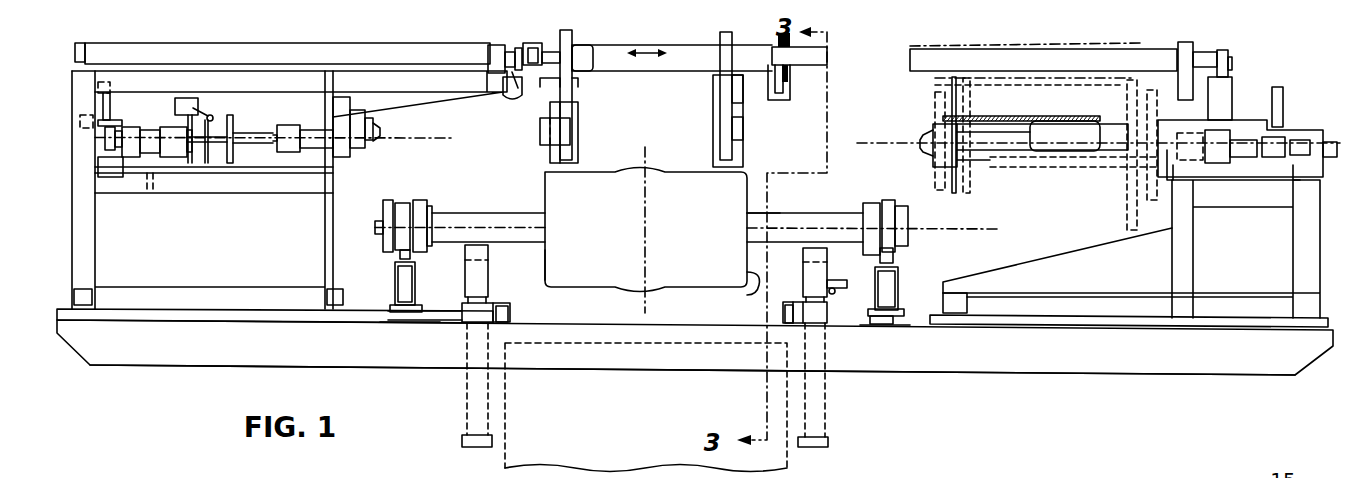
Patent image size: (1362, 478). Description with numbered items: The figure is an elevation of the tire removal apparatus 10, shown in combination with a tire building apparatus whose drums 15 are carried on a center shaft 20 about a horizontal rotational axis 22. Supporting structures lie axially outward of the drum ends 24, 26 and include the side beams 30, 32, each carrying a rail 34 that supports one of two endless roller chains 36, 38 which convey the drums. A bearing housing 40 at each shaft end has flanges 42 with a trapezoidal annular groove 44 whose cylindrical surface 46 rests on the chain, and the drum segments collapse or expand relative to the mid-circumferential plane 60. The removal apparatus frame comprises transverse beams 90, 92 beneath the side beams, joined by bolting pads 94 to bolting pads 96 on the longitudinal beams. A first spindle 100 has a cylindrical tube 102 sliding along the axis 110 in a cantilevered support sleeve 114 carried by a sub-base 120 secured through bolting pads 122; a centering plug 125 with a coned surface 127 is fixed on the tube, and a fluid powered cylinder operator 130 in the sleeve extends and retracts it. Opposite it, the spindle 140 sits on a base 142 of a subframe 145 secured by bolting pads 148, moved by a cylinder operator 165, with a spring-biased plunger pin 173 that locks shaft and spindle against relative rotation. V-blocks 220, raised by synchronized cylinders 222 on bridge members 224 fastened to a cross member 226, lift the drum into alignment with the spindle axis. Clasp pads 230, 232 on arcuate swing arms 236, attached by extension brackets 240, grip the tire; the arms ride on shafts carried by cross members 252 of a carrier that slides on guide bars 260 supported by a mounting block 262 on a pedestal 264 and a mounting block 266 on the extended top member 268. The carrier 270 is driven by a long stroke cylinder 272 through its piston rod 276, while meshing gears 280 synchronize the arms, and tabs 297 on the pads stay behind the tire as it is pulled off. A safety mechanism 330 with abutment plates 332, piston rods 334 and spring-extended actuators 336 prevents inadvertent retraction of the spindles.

The tire removal apparatus 10 is at (154, 375).
The drum 15 is at (781, 213).
The center shaft 20 is at (457, 224).
The rotational axis 22 is at (967, 230).
The end of the drum 24 is at (758, 275).
The end of the drum 26 is at (543, 262).
The side beam 30 is at (903, 312).
The side beam 32 is at (388, 306).
The rail 34 is at (395, 281).
The endless loop of roller chain 36 is at (893, 260).
The endless loop of roller chain 38 is at (400, 254).
The bearing housing 40 is at (431, 212).
The circumferential flange 42 is at (420, 250).
The annular groove 44 is at (408, 210).
The cylindrical surface 46 is at (383, 213).
The mid-circumferential plane 60 is at (648, 150).
The beam 90 is at (1017, 358).
The beam 92 is at (1060, 364).
The bolting pad 94 is at (408, 323).
The bolting pad 96 is at (437, 313).
The first spindle 100 is at (994, 113).
The cylindrical tube 102 is at (1033, 133).
The axis 110 is at (427, 137).
The support sleeve 114 is at (1090, 116).
The sub-base 120 is at (1300, 243).
The bolting pad 122 is at (1280, 325).
The centering plug 125 is at (930, 132).
The coned surface 127 is at (922, 147).
The fluid powered cylinder operator 130 is at (1223, 137).
The spindle 140 is at (382, 123).
The base 142 is at (272, 165).
The subframe 145 is at (85, 262).
The bolting pad 148 is at (315, 313).
The fluid power cylinder operator 165 is at (148, 152).
The spring-biased plunger pin 173 is at (377, 122).
The V-block 220 is at (482, 282).
The fluid power cylinder 222 is at (475, 385).
The bridge member 224 is at (505, 303).
The cross member 226 is at (503, 310).
The pad 230 is at (716, 83).
The pad 232 is at (580, 110).
The arcuate swing arm 236 is at (580, 133).
The extension bracket 240 is at (742, 138).
The cross member 252 is at (573, 42).
The guide bar 260 is at (595, 50).
The mounting block 262 is at (1223, 52).
The pedestal 264 is at (1223, 107).
The mounting block 266 is at (490, 58).
The extended top member 268 is at (500, 92).
The carrier 270 is at (619, 80).
The long stroke fluid powered cylinder 272 is at (262, 57).
The piston rod 276 is at (527, 52).
The gear 280 is at (793, 47).
The tab 297 is at (538, 83).
The safety mechanism 330 is at (122, 111).
The abutment plate 332 is at (94, 130).
The piston rod 334 is at (97, 149).
The actuator 336 is at (100, 102).